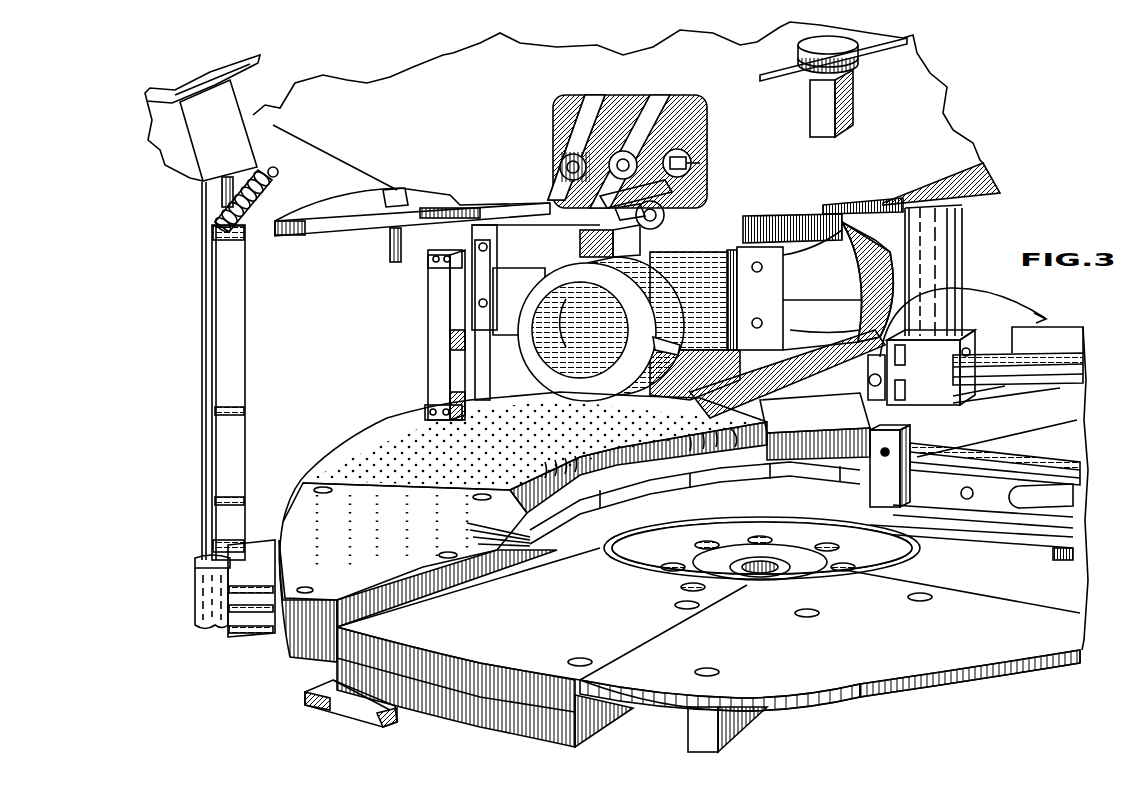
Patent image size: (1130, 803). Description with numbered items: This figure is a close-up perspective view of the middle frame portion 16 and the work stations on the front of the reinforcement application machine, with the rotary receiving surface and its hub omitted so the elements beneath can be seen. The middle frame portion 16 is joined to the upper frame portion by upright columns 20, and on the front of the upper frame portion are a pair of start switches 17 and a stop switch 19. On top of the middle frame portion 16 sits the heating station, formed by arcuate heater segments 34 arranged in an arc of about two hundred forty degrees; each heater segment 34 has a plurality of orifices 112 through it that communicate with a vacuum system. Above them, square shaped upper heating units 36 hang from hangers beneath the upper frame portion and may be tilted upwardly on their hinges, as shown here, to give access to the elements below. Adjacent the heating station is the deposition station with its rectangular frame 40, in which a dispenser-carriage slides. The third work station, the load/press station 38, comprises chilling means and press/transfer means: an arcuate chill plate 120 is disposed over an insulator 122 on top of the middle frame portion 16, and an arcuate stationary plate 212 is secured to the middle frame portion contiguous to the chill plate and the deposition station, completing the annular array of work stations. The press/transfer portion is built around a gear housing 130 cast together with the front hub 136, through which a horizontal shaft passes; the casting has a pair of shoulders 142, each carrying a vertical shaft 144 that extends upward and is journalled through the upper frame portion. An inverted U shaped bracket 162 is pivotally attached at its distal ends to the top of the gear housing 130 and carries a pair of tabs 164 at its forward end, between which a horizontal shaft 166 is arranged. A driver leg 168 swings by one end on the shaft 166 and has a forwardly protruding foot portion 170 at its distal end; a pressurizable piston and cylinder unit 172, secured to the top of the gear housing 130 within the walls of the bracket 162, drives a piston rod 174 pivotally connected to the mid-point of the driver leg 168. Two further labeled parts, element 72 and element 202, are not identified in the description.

The middle frame portion 16 is at (357, 713).
The start switches 17 is at (240, 138).
The stop switch 19 is at (797, 42).
The upright columns 20 is at (243, 468).
The arcuate heater segments 34 is at (389, 438).
The square shaped heating units 36 is at (428, 343).
The load/press station 38 is at (548, 182).
The rectangular frame 40 is at (930, 483).
The pipe 72 is at (957, 270).
The orifices 112 is at (602, 489).
The arcuate chill plate 120 is at (567, 580).
The insulator 122 is at (517, 740).
The gear housing 130 is at (722, 240).
The front hub 136 is at (540, 283).
The shoulders 142 is at (843, 262).
The vertical shaft 144 is at (793, 226).
The inverted U shaped bracket 162 is at (641, 102).
The tabs 164 is at (590, 140).
The shaft 166 is at (702, 165).
The driver leg 168 is at (608, 190).
The foot portion 170 is at (590, 222).
The pressurizable piston and cylinder unit 172 is at (668, 212).
The piston rod 174 is at (648, 222).
The cylindrical ring 202 is at (650, 393).
The arcuate stationary plate 212 is at (840, 693).